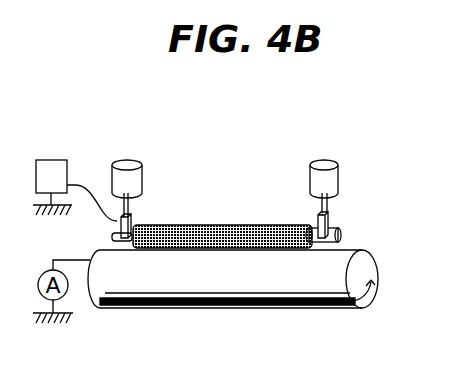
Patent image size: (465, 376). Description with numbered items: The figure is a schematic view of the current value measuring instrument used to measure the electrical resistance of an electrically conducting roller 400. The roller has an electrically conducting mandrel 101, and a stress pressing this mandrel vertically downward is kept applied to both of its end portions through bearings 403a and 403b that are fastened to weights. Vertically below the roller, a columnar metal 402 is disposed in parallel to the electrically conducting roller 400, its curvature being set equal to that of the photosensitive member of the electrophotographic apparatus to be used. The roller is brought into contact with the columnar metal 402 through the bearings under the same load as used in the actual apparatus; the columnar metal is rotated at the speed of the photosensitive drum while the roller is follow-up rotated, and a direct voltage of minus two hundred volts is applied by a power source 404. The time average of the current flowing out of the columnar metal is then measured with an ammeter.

The power source 404 is at (75, 190).
The bearing 403a is at (133, 218).
The electrically conducting roller 400 is at (236, 224).
The bearing 403b is at (338, 218).
The electrically conducting mandrel 101 is at (341, 234).
The columnar metal 402 is at (212, 307).